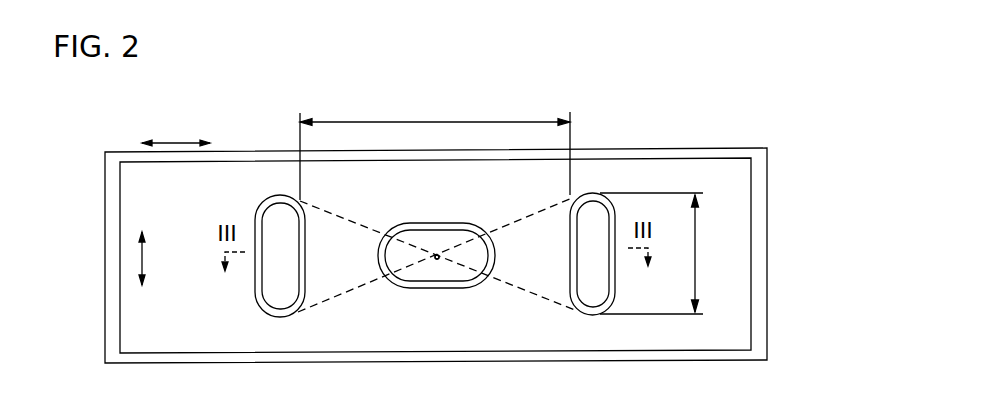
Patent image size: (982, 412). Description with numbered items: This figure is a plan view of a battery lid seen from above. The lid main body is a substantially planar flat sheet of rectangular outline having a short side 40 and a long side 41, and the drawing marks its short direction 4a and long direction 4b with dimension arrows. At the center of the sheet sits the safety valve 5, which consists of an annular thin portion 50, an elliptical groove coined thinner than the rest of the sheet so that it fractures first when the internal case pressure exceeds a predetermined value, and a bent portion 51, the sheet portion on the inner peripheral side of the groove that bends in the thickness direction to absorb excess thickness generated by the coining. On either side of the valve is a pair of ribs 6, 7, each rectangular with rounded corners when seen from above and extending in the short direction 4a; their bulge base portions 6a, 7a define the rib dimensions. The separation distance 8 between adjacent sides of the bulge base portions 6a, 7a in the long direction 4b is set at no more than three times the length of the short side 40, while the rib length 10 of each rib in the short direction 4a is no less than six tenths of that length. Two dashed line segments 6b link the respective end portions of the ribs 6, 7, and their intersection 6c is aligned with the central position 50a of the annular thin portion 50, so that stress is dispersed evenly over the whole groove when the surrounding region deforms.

The short direction 4a is at (144, 258).
The long direction 4b is at (172, 141).
The safety valve 5 is at (436, 285).
The rib 6 is at (583, 196).
The bulge base portion 6a is at (597, 197).
The line segments 6b is at (348, 218).
The intersection 6c is at (437, 255).
The rib 7 is at (258, 212).
The bulge base portion 7a is at (270, 197).
The separation distance 8 is at (435, 121).
The rib length 10 is at (697, 248).
The short side 40 is at (754, 167).
The long side 41 is at (700, 159).
The annular thin portion 50 is at (403, 285).
The central position 50a is at (441, 222).
The bent portion 51 is at (441, 278).